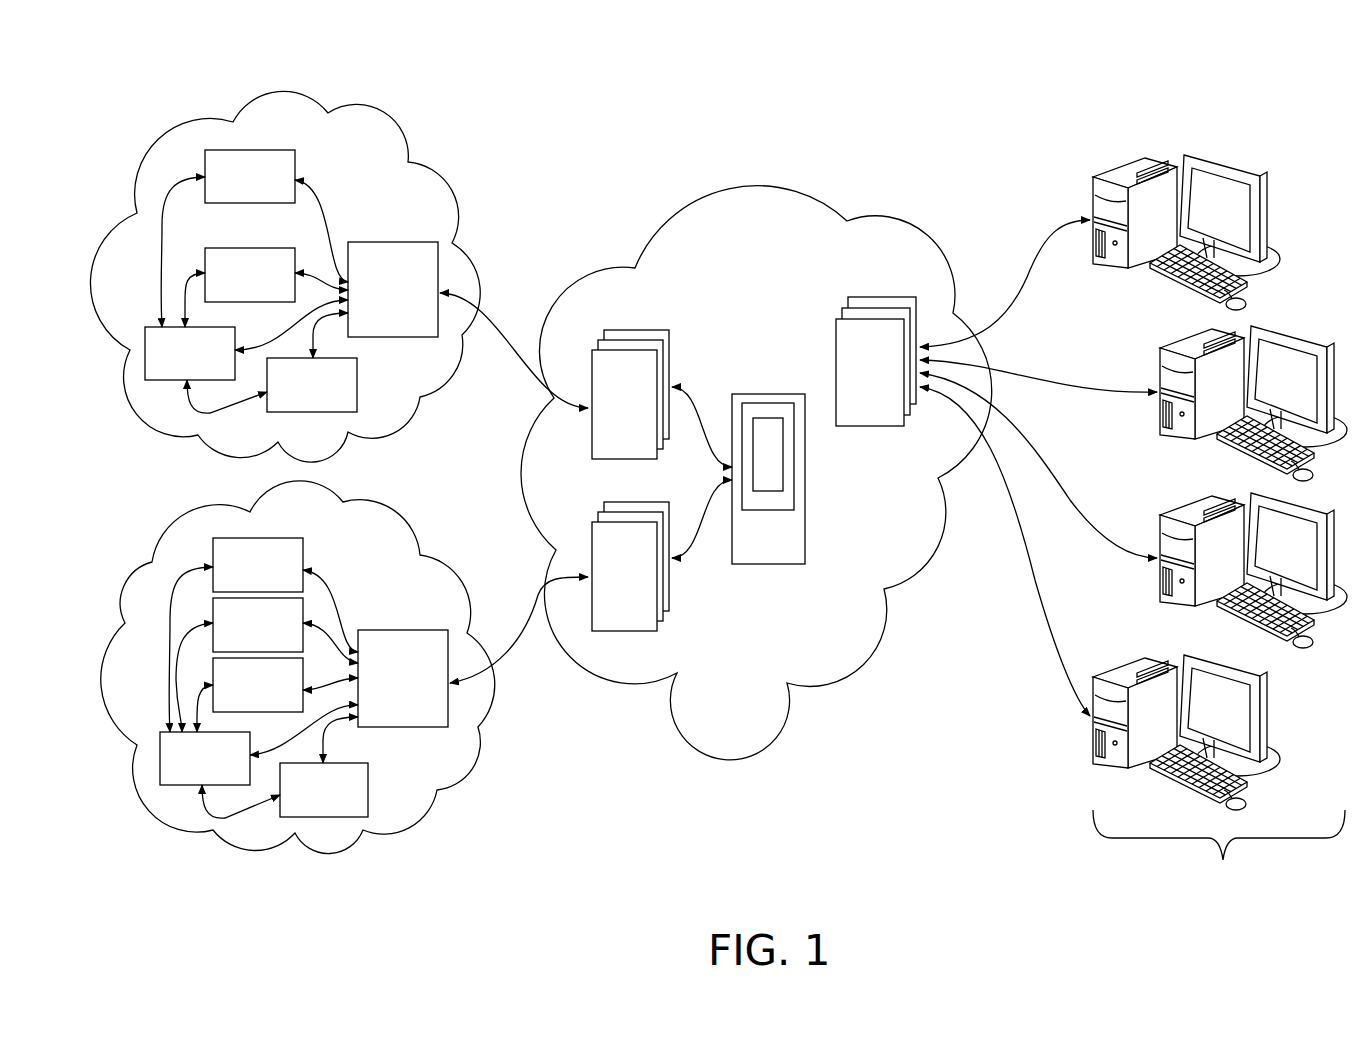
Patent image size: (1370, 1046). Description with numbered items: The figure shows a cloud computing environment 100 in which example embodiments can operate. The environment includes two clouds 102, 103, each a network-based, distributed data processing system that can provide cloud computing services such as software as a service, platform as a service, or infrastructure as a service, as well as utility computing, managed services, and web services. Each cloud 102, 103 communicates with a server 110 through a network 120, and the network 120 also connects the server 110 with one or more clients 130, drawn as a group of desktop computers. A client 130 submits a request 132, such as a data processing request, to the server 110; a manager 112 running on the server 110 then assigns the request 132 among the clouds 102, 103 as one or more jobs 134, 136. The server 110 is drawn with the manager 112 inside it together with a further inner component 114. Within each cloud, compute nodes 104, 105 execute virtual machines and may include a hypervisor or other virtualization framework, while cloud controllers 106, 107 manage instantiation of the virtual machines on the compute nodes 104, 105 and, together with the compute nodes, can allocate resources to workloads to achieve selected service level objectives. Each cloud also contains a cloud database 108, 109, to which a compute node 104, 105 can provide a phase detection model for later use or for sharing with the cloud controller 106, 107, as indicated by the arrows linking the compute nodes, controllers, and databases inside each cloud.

The cloud computing environment 100 is at (718, 468).
The cloud 102 is at (300, 276).
The cloud 103 is at (310, 667).
The compute node 104 is at (229, 188).
The compute node 105 is at (237, 576).
The cloud controller 106 is at (372, 301).
The cloud controller 107 is at (382, 690).
The cloud database 108 is at (169, 364).
The cloud database 109 is at (184, 769).
The server 110 is at (762, 420).
The manager 112 is at (748, 407).
The memory 114 is at (773, 428).
The network 120 is at (756, 473).
The client 130 is at (1220, 525).
The request 132 is at (849, 374).
The job 134 is at (603, 409).
The job 136 is at (603, 582).